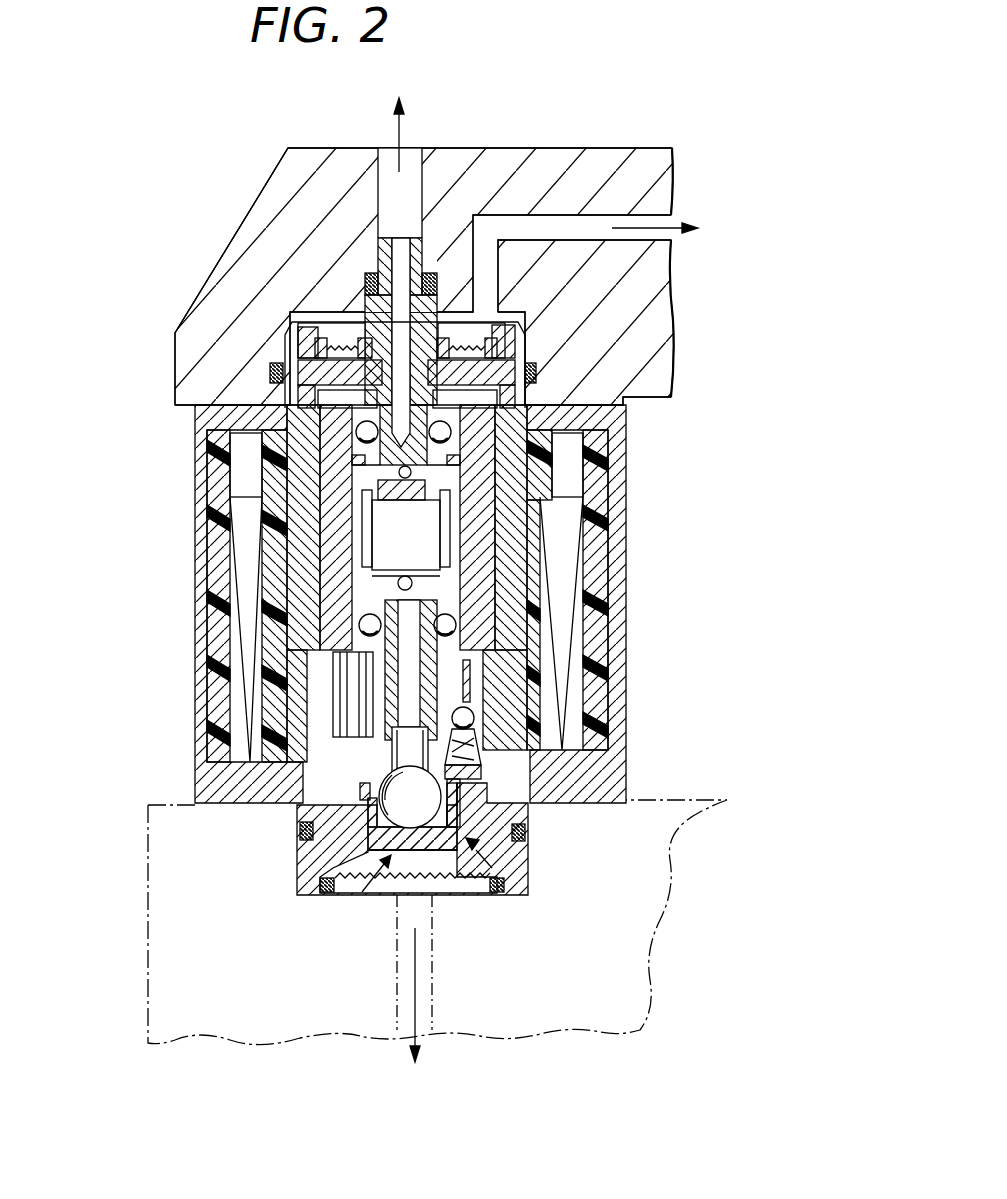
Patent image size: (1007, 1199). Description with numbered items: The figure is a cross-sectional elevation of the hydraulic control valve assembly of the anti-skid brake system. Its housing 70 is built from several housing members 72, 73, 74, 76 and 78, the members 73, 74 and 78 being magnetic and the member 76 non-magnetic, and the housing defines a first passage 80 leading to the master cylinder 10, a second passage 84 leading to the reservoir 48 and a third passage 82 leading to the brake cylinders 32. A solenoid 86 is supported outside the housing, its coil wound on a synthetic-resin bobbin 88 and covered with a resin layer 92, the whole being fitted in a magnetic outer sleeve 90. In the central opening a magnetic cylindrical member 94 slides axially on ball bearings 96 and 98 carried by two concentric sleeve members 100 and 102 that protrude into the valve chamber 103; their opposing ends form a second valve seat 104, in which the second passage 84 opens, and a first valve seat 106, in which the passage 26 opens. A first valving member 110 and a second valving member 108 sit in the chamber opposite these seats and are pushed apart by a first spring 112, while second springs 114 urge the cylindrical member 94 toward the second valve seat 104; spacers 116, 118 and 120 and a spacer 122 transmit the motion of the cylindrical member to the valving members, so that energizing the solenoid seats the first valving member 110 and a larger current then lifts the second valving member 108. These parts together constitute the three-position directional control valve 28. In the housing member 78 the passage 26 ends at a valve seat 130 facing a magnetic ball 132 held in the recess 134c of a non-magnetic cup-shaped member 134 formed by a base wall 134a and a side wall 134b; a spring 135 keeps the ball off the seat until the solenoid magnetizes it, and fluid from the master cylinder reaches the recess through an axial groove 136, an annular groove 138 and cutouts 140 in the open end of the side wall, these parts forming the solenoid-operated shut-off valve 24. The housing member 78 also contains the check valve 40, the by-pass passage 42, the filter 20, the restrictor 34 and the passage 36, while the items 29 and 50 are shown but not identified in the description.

The master cylinder 10 is at (437, 947).
The filter 20 is at (428, 845).
The solenoid-operated shut-off valve 24 is at (510, 855).
The passage 26 is at (262, 700).
The three-position directional control valve 28 is at (636, 487).
The cap 29 is at (341, 348).
The brake cylinders 32 is at (709, 238).
The restrictor 34 is at (555, 760).
The passage 36 is at (472, 762).
The check valve 40 is at (494, 712).
The by-pass passage 42 is at (472, 690).
The reservoir 48 is at (423, 118).
The chamber 50 is at (573, 402).
The housing 70 is at (186, 282).
The housing member 72 is at (238, 252).
The housing member 73 is at (355, 428).
The housing member 74 is at (350, 455).
The housing member 76 is at (255, 672).
The housing member 78 is at (312, 870).
The first passage 80 is at (395, 885).
The third passage 82 is at (598, 226).
The second passage 84 is at (413, 165).
The solenoid 86 is at (590, 605).
The bobbin 88 is at (560, 650).
The outer sleeve 90 is at (575, 545).
The synthetic resin layer 92 is at (605, 618).
The cylindrical member 94 is at (345, 470).
The ball bearing 96 is at (300, 414).
The ball bearing 98 is at (290, 640).
The sleeve member 100 is at (383, 258).
The sleeve member 102 is at (410, 690).
The valve chamber 103 is at (427, 539).
The second valve seat 104 is at (552, 470).
The first valve seat 106 is at (563, 570).
The second valving member 108 is at (338, 490).
The first valving member 110 is at (360, 615).
The compression coil spring 112 is at (562, 512).
The compression coil springs 114 is at (240, 727).
The spacer 116 is at (360, 590).
The spacer 118 is at (293, 540).
The spacer 120 is at (328, 515).
The spacer 122 is at (558, 445).
The valve seat 130 is at (380, 790).
The ball 132 is at (425, 850).
The cup-shaped member 134 is at (378, 860).
The base wall 134a is at (432, 852).
The side wall 134b is at (508, 815).
The recess 134c is at (378, 868).
The compression coil spring 135 is at (352, 738).
The axial groove 136 is at (488, 842).
The annular groove 138 is at (462, 800).
The cutouts 140 is at (360, 798).